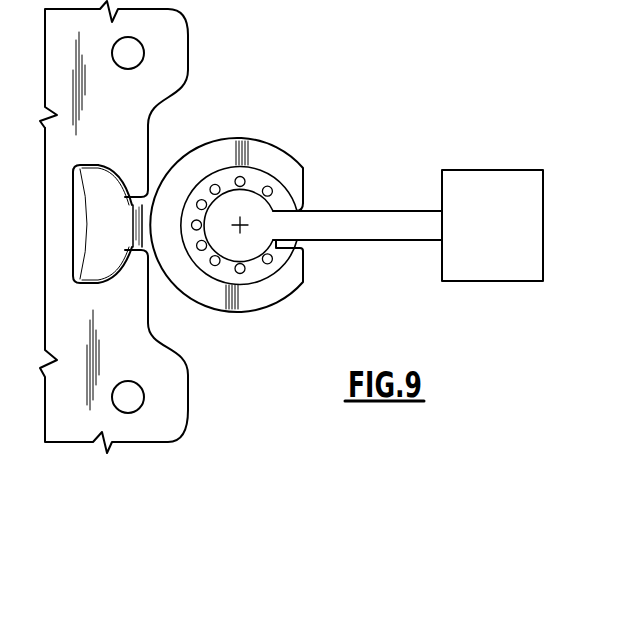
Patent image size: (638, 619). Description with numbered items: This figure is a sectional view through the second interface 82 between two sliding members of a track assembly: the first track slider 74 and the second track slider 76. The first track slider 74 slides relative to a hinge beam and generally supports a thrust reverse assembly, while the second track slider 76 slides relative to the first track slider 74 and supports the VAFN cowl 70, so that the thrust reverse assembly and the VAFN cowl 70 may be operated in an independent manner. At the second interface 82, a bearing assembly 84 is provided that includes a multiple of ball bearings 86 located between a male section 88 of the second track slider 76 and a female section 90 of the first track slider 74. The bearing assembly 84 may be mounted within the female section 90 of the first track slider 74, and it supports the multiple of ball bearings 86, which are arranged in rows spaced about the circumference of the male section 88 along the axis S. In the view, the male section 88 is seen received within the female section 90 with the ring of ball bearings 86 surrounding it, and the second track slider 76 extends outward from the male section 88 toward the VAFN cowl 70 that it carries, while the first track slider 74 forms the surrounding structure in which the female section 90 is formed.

The VAFN cowl 70 is at (506, 236).
The first track slider 74 is at (111, 242).
The second track slider 76 is at (337, 193).
The second interface 82 is at (246, 212).
The bearing assembly 84 is at (247, 272).
The ball bearings 86 is at (241, 287).
The male section 88 is at (230, 193).
The female section 90 is at (214, 272).
The axis S is at (243, 224).